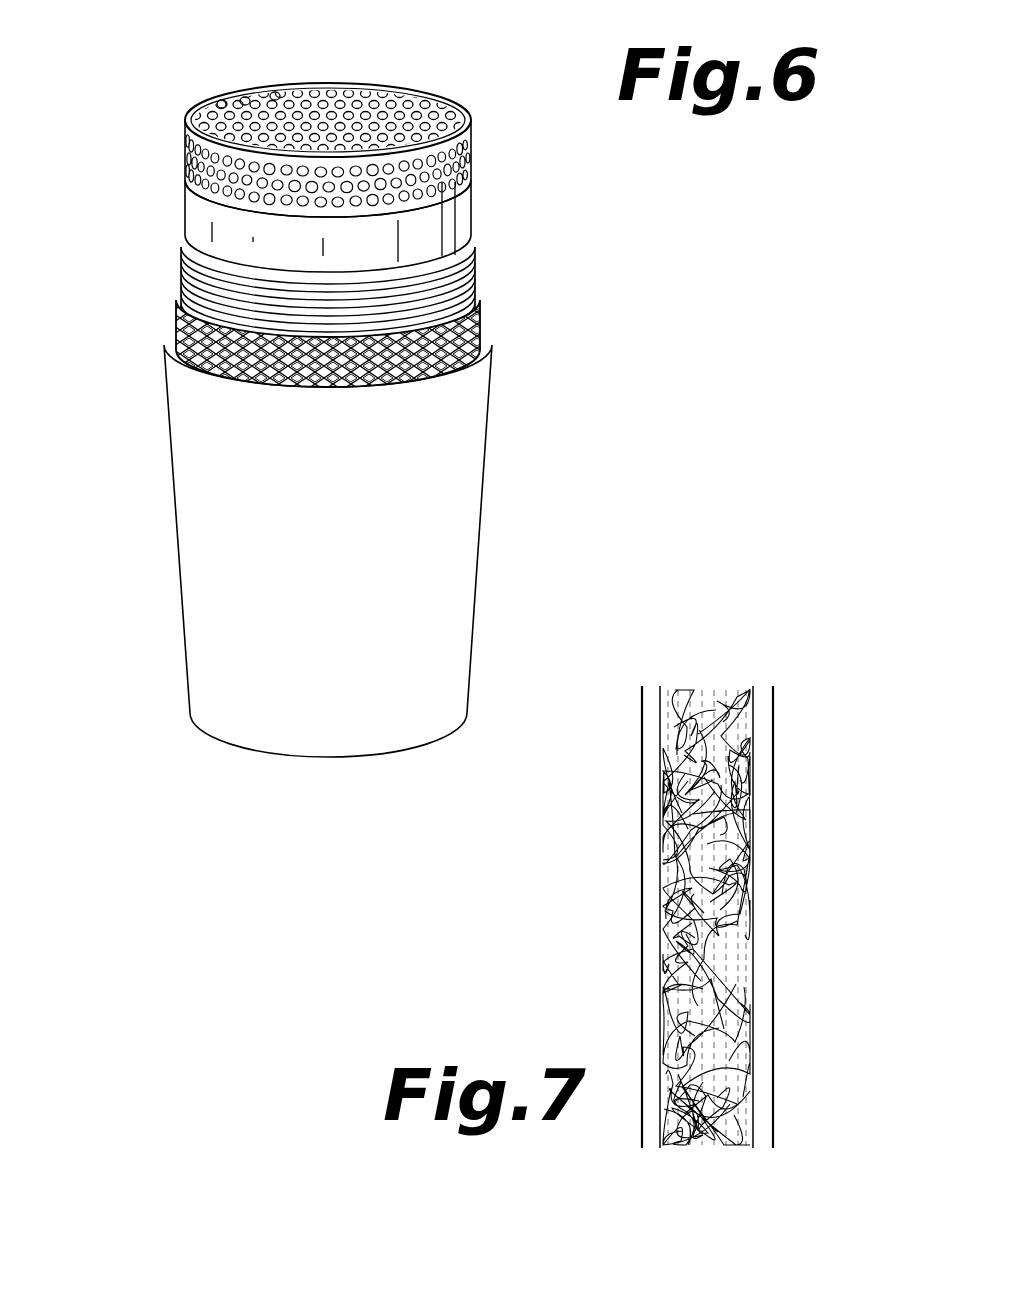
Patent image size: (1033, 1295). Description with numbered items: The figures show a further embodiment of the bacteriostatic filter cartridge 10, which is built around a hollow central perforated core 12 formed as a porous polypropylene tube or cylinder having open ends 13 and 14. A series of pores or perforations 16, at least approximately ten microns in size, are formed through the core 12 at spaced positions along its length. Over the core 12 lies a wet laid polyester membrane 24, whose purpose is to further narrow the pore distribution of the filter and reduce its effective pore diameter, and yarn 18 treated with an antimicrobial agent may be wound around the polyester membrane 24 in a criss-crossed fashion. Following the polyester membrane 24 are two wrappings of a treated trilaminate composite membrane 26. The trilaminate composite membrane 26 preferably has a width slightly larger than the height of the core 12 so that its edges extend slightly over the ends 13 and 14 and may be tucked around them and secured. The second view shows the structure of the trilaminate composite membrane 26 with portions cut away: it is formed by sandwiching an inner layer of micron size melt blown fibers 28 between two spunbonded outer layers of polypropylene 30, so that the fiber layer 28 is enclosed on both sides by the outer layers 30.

In FIG. 6, the bacteriostatic filter cartridge 10 is at (167, 526).
In FIG. 6, the hollow central perforated core 12 is at (330, 90).
In FIG. 6, the open end 13 is at (393, 82).
In FIG. 6, the open end 14 is at (417, 747).
In FIG. 6, the pores or perforations 16 is at (275, 92).
In FIG. 6, the yarn 18 is at (482, 333).
In FIG. 6, the wet laid polyester membrane 24 is at (473, 212).
In FIG. 6, the trilaminate composite membrane 26 is at (478, 267).
In FIG. 7, the trilaminate composite membrane 26 is at (636, 669).
In FIG. 7, the melt blown fibers 28 is at (707, 686).
In FIG. 7, the spunbonded outer layers of polypropylene 30 is at (773, 838).